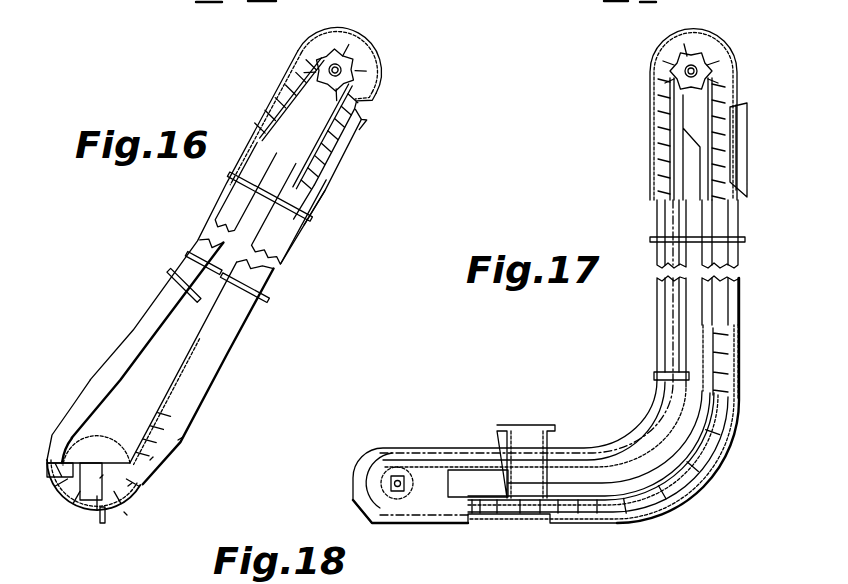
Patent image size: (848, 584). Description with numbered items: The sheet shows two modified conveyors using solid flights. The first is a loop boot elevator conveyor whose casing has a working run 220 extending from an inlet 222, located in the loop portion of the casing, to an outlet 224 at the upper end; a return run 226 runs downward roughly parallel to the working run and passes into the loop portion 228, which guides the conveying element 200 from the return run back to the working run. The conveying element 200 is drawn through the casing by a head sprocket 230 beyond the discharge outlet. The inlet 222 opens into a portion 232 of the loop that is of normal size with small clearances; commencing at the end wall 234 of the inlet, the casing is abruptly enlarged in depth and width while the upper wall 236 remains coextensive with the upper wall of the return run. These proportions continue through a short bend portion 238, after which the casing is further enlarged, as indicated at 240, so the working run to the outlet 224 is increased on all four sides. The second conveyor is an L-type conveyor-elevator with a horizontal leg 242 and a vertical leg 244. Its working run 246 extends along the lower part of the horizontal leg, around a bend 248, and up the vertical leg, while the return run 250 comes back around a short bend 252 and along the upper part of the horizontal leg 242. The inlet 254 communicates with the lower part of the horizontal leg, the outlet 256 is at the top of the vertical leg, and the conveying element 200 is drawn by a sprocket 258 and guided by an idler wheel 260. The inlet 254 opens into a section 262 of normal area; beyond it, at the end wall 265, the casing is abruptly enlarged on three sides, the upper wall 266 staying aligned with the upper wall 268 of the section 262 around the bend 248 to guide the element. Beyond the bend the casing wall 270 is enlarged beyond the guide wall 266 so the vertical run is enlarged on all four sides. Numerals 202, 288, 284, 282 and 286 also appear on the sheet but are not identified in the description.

In FIG. 16, the conveyor assembly 202 is at (223, 255).
In FIG. 16, the head sprocket 230 is at (343, 72).
In FIG. 16, the outlet 224 is at (343, 163).
In FIG. 16, the return run 226 is at (222, 203).
In FIG. 16, the inlet 222 is at (80, 416).
In FIG. 16, the enlarged casing portion 240 is at (142, 435).
In FIG. 16, the working run 220 is at (183, 437).
In FIG. 16, the conveying element 200 is at (153, 457).
In FIG. 17, the conveying element 200 is at (663, 168).
In FIG. 18, the conveying element 200 is at (189, 574).
In FIG. 16, the end wall 234 is at (103, 475).
In FIG. 16, the upper wall 236 is at (132, 483).
In FIG. 16, the bend portion 238 is at (127, 515).
In FIG. 16, the loop portion 228 is at (57, 483).
In FIG. 16, the loop portion communicating with inlet 232 is at (87, 507).
In FIG. 17, the sprocket 258 is at (700, 58).
In FIG. 17, the outlet 256 is at (747, 163).
In FIG. 17, the return run 250 is at (658, 310).
In FIG. 17, the vertical leg 244 is at (739, 305).
In FIG. 17, the casing wall 270 is at (712, 350).
In FIG. 17, the inlet 254 is at (528, 428).
In FIG. 17, the horizontal leg 242 is at (468, 439).
In FIG. 17, the idler wheel 260 is at (358, 467).
In FIG. 17, the upper wall 266 is at (700, 415).
In FIG. 17, the short bend 252 is at (648, 420).
In FIG. 17, the end wall 265 is at (552, 478).
In FIG. 17, the upper wall of inlet section 268 is at (507, 498).
In FIG. 17, the inlet section 262 is at (520, 520).
In FIG. 17, the working run 246 is at (605, 512).
In FIG. 17, the bend 248 is at (707, 467).
In FIG. 18, the element 288 is at (61, 574).
In FIG. 18, the element 284 is at (352, 583).
In FIG. 18, the element 282 is at (540, 583).
In FIG. 18, the element 286 is at (767, 574).